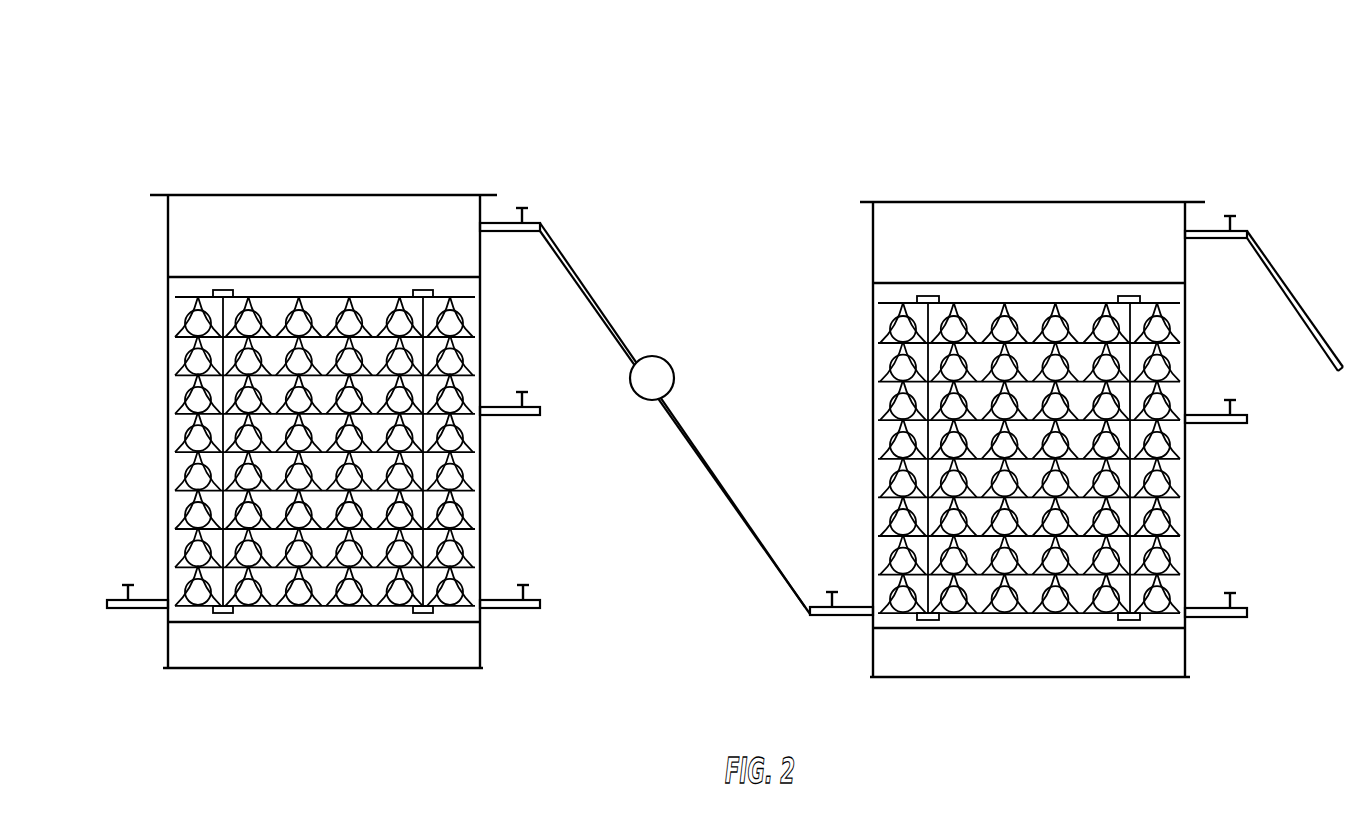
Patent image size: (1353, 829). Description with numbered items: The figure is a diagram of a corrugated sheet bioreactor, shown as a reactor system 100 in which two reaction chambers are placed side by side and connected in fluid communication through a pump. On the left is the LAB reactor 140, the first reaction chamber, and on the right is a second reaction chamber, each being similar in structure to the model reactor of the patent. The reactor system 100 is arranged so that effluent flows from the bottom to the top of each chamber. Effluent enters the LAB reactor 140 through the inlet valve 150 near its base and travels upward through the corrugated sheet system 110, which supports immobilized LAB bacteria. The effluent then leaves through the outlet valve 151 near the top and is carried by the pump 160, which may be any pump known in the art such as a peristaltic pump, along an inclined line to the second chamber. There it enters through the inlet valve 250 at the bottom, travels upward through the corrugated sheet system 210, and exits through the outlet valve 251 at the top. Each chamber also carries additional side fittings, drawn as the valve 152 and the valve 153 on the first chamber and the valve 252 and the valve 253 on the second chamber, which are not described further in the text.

The reactor system 100 is at (785, 75).
The corrugated sheet system 110 is at (273, 393).
The LAB reactor 140 is at (150, 432).
The inlet valve 150 is at (115, 608).
The outlet valve 151 is at (505, 231).
The pipe 152 is at (510, 415).
The drain pipe 153 is at (508, 608).
The pump 160 is at (652, 403).
The corrugated sheet system 210 is at (1082, 395).
The inlet valve 250 is at (837, 615).
The outlet valve 251 is at (1242, 232).
The pipe 252 is at (1220, 423).
The drain pipe 253 is at (1225, 617).